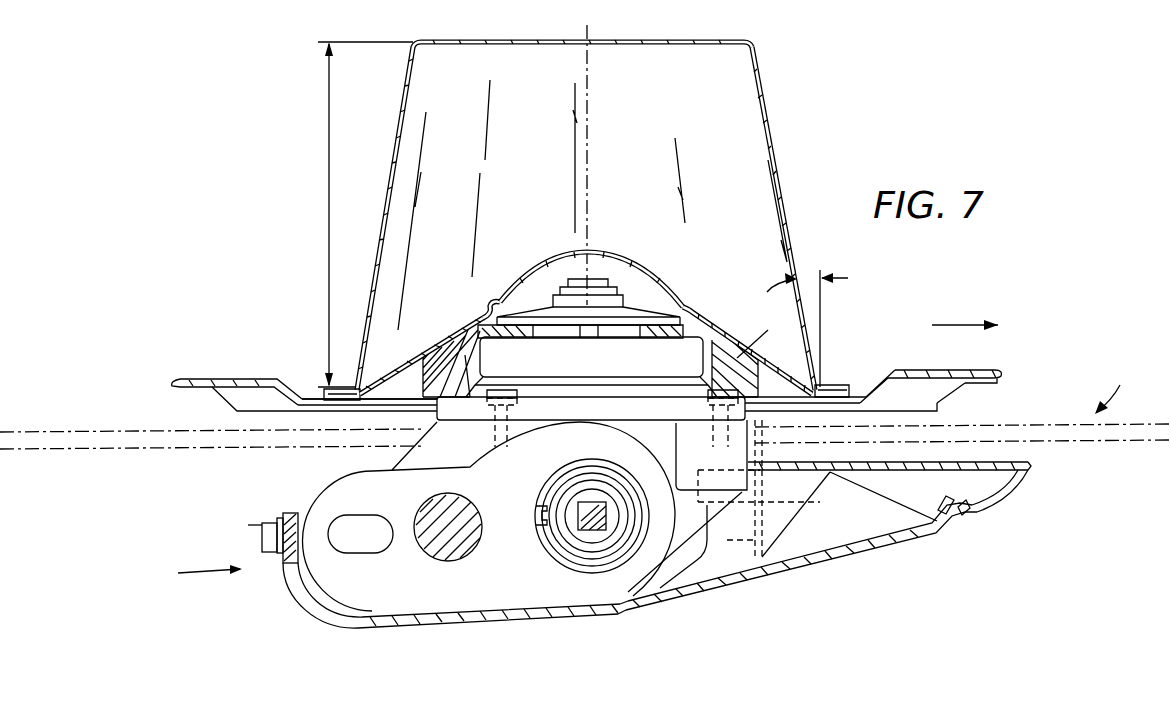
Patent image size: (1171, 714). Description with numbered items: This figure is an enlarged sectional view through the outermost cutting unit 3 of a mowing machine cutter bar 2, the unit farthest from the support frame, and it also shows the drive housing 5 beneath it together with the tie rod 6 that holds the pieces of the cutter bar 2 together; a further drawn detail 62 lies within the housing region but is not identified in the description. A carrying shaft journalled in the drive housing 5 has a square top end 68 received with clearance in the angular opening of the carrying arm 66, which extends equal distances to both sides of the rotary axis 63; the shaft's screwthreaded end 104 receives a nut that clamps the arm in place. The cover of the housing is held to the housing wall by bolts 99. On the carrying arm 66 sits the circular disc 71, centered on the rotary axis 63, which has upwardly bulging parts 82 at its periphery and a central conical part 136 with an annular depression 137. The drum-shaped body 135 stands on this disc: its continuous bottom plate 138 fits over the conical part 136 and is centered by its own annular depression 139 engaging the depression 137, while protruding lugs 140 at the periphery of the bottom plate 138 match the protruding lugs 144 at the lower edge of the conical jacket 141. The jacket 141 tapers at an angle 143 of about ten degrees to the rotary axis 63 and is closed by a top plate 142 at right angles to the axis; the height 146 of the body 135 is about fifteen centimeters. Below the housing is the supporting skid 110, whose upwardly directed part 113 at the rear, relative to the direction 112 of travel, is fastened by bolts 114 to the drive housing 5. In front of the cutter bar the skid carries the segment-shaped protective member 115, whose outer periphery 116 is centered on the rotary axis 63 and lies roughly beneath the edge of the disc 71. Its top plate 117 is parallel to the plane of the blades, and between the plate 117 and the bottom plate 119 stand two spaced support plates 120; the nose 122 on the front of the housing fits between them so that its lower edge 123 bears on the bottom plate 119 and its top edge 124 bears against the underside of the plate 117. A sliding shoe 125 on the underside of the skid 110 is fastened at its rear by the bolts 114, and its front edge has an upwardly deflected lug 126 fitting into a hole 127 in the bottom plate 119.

The cutter bar 2 is at (200, 572).
The cutting unit 3 is at (1108, 390).
The drive housing 5 is at (522, 516).
The tie rod 6 is at (432, 548).
The pivot bearing 62 is at (592, 500).
The rotary axis 63 is at (590, 166).
The carrying arm 66 is at (768, 293).
The top end of the carrying shaft 68 is at (626, 331).
The disc 71 is at (592, 360).
The upwardly bulging part 82 is at (205, 352).
The bolt 99 is at (503, 390).
The screwthreaded end 104 is at (565, 270).
The supporting skid 110 is at (630, 576).
The direction 112 is at (955, 322).
The upwardly directed part 113 is at (290, 513).
The bolt 114 is at (262, 525).
The protective member 115 is at (898, 488).
The outer periphery 116 is at (1032, 466).
The plate 117 is at (968, 462).
The bottom plate 119 is at (833, 553).
The support plate 120 is at (759, 488).
The nose 122 is at (800, 503).
The lower edge 123 is at (727, 578).
The top edge 124 is at (797, 464).
The sliding shoe 125 is at (572, 614).
The upwardly deflected lug 126 is at (980, 503).
The hole 127 is at (963, 518).
The body 135 is at (597, 219).
The conical part 136 is at (625, 268).
The annular depression 137 is at (685, 305).
The bottom plate 138 is at (440, 338).
The annular depression 139 is at (488, 312).
The protruding lug 140 is at (880, 386).
The conical jacket 141 is at (780, 150).
The top plate 142 is at (655, 44).
The angle 143 is at (820, 270).
The protruding lug 144 is at (838, 386).
The height 146 is at (332, 218).